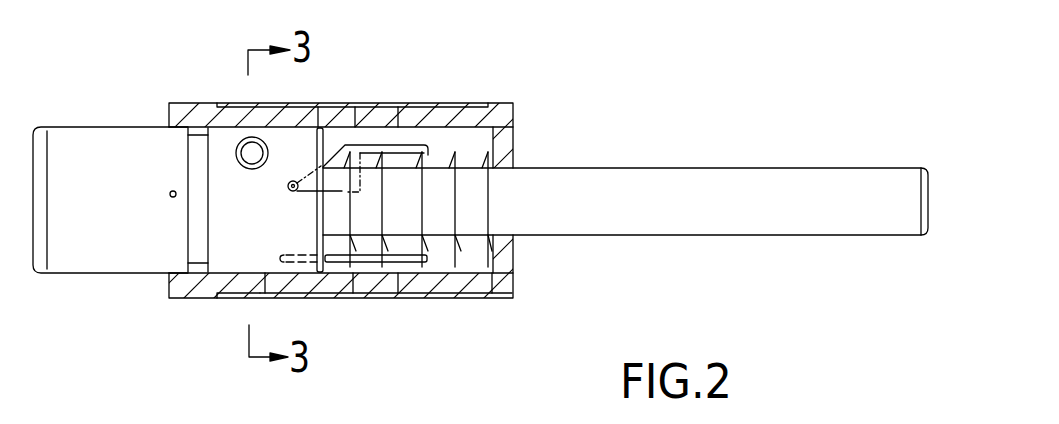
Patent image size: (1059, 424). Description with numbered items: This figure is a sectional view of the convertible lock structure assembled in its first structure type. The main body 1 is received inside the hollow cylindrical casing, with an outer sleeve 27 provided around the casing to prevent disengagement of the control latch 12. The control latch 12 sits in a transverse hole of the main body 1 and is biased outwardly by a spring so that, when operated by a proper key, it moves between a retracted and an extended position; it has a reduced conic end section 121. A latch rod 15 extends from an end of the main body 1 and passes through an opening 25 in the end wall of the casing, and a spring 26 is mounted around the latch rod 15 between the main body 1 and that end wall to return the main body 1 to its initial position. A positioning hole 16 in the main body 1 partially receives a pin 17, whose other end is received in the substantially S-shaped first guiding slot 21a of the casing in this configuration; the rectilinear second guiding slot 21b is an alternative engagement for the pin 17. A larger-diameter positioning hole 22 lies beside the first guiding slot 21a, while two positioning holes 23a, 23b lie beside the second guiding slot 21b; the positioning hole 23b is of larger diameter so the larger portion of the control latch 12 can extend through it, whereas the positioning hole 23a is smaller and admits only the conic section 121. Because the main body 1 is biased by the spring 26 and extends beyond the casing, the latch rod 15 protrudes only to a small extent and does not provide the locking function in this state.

The main body 1 is at (85, 138).
The control latch 12 is at (237, 150).
The reduced conic end section 121 is at (237, 140).
The latch rod 15 is at (745, 220).
The positioning hole 16 is at (292, 182).
The pin 17 is at (293, 186).
The first guiding slot 21a is at (397, 142).
The second guiding slot 21b is at (413, 260).
The positioning hole 22 is at (372, 103).
The positioning hole 23a is at (237, 298).
The positioning hole 23b is at (380, 281).
The opening 25 is at (518, 163).
The spring 26 is at (462, 252).
The outer sleeve 27 is at (488, 103).